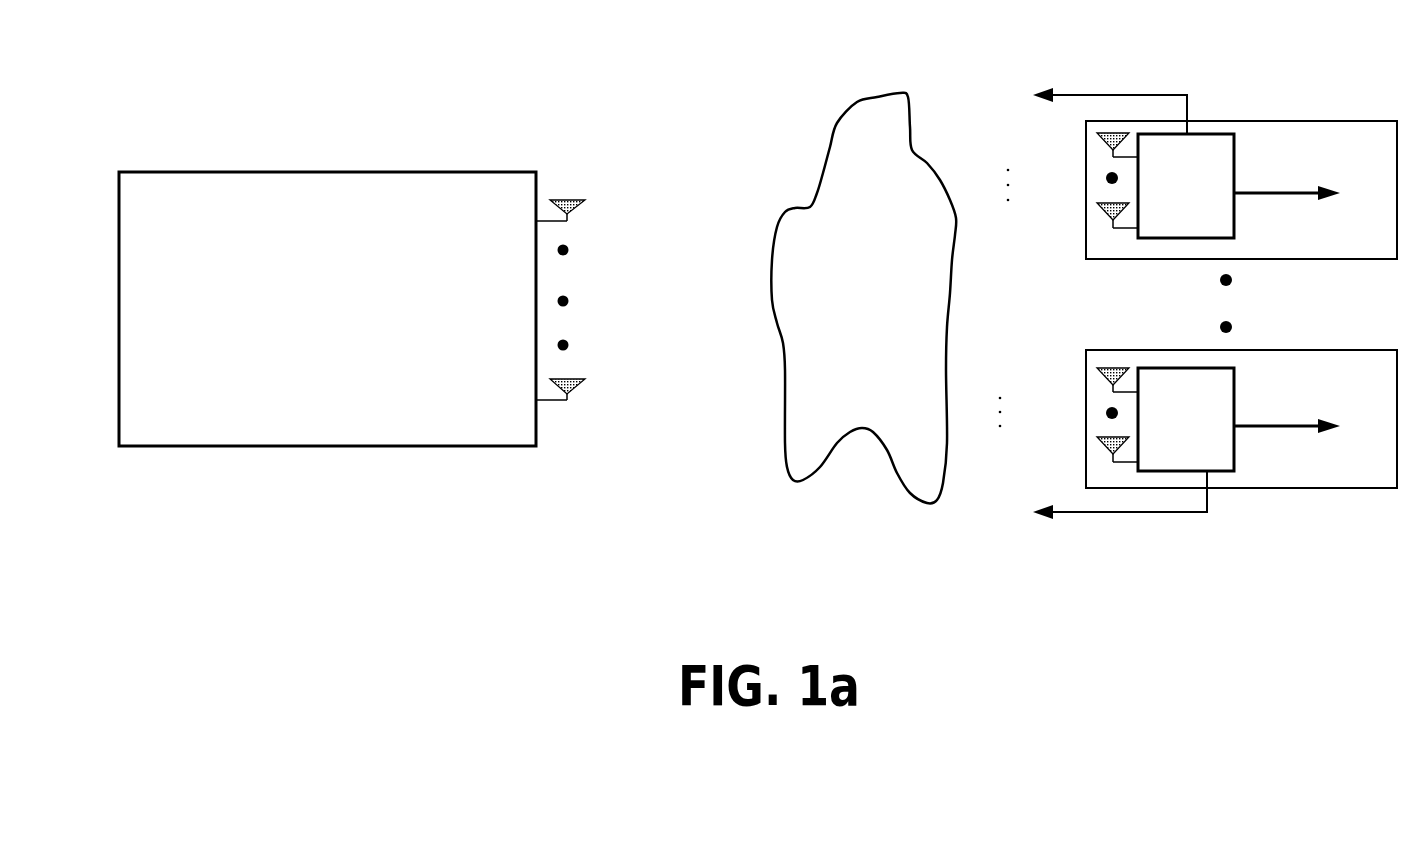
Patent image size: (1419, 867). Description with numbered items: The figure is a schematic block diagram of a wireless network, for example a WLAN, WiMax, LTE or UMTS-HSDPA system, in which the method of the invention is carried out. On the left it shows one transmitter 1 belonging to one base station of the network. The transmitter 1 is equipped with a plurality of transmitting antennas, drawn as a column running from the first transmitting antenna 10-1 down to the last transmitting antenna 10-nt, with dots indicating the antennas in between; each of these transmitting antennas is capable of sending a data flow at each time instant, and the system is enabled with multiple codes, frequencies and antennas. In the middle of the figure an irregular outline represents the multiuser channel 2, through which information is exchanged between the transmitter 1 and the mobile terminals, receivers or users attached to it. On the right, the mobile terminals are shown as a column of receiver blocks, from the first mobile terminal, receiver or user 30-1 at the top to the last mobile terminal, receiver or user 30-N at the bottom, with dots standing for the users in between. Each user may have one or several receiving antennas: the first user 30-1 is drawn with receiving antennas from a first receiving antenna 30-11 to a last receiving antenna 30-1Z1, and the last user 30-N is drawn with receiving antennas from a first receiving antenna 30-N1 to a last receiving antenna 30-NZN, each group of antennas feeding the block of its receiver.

The transmitter 1 is at (188, 172).
The transmitting antenna 10-1 is at (581, 192).
The transmitting antenna 10-nt is at (583, 410).
The multiuser channel 2 is at (835, 125).
The mobile terminal, receiver or user 30-1 is at (1326, 120).
The receiving antenna 30-11 is at (1103, 141).
The receiving antenna 30-1Z1 is at (1105, 212).
The mobile terminal, receiver or user 30-N is at (1303, 488).
The receiving antenna 30-N1 is at (1103, 376).
The receiving antenna 30-NZN is at (1105, 445).